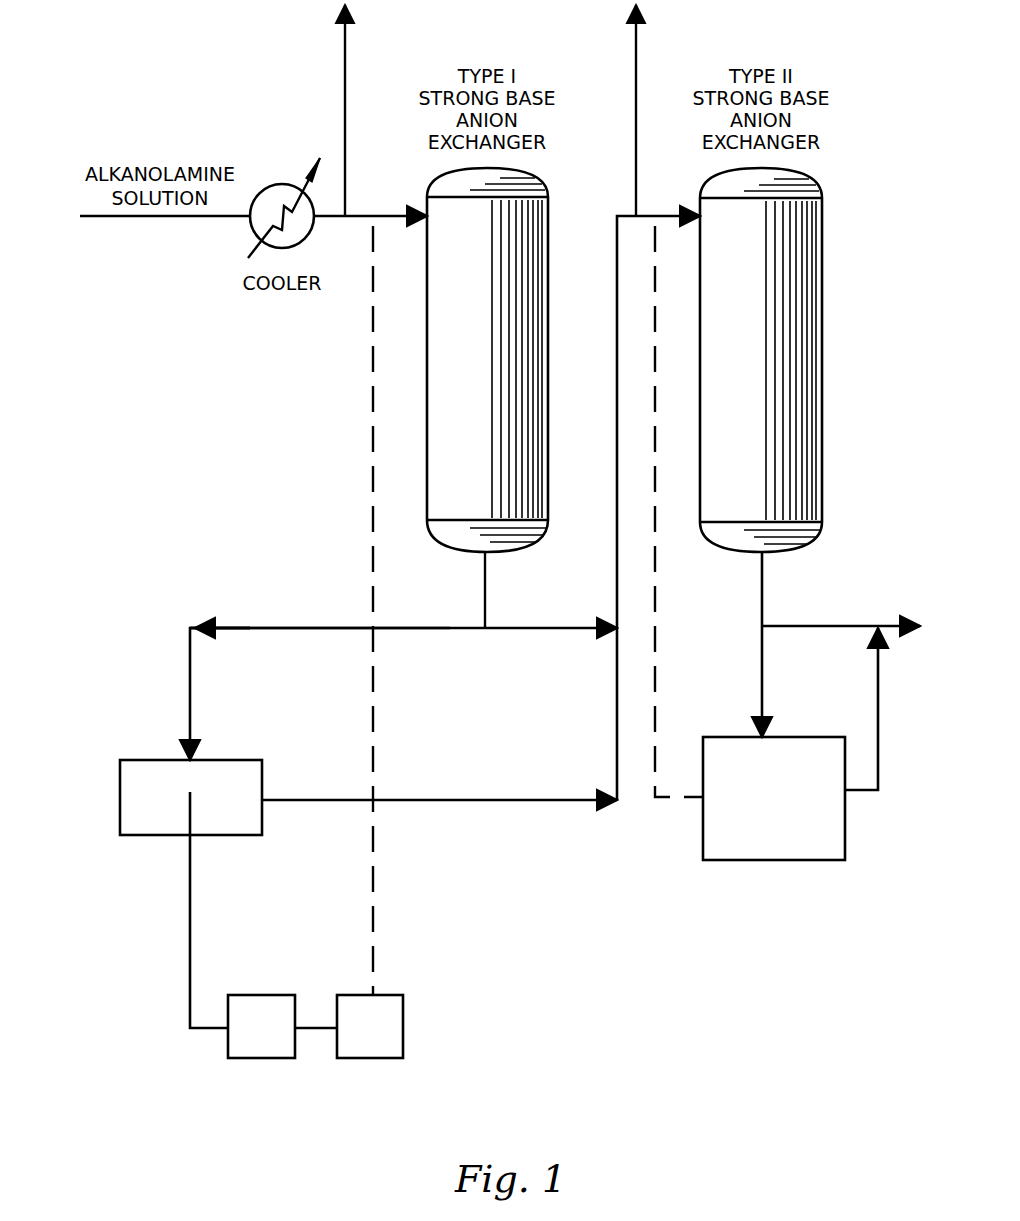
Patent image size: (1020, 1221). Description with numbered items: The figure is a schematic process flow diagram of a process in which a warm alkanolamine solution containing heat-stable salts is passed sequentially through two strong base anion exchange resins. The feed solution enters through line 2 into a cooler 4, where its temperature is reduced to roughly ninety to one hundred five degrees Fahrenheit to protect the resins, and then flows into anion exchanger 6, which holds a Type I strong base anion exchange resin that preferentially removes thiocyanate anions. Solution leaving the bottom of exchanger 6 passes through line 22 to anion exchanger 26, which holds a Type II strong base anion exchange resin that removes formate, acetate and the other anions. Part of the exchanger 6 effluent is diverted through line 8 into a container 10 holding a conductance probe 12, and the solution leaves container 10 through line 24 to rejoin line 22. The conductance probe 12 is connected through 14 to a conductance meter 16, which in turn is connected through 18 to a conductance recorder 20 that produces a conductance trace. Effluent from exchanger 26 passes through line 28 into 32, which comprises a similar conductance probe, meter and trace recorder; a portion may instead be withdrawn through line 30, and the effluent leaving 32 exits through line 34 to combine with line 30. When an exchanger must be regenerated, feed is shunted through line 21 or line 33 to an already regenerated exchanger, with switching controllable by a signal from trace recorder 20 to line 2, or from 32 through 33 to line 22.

The line 2 is at (193, 219).
The cooler 4 is at (282, 185).
The anion exchanger 6 is at (487, 398).
The line 8 is at (326, 633).
The container 10 is at (266, 760).
The conductance probe 12 is at (188, 800).
The connection 14 is at (193, 946).
The conductance meter 16 is at (261, 1026).
The connection 18 is at (326, 1032).
The conductance recorder 20 is at (370, 1026).
The line 21 is at (345, 100).
The line 22 is at (666, 214).
The line 24 is at (468, 798).
The anion exchanger 26 is at (761, 360).
The line 28 is at (760, 597).
The line 30 is at (810, 624).
The conductance unit 32 is at (774, 798).
The line 33 is at (636, 82).
The line 34 is at (877, 708).